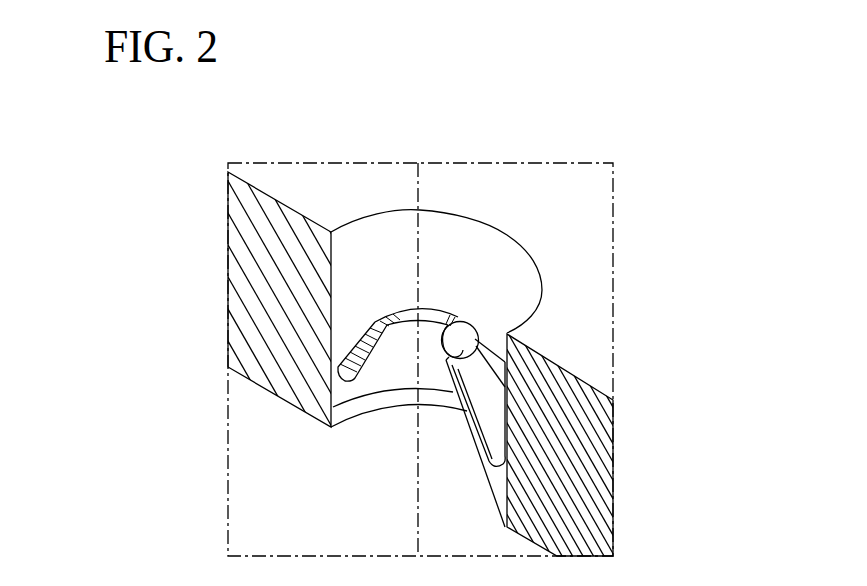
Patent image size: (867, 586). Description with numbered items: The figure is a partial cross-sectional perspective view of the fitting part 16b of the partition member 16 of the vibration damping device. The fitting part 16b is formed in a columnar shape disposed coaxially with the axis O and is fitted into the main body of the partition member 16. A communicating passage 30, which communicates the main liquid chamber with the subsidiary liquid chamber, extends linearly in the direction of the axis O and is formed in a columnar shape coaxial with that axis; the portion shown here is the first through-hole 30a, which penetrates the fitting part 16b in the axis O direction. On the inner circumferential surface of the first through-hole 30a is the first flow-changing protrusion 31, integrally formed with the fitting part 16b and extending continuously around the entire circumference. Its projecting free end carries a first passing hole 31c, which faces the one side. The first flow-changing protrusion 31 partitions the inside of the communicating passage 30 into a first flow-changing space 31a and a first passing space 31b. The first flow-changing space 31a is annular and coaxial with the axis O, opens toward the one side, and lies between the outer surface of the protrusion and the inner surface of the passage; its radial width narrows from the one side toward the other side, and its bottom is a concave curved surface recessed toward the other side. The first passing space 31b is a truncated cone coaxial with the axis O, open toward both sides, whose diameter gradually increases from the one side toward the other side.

The partition member 16 is at (616, 510).
The fitting part 16b is at (583, 437).
The communicating passage 30 is at (375, 248).
The first through-hole 30a is at (510, 283).
The first flow-changing protrusion 31 is at (352, 352).
The first flow-changing space 31a is at (349, 327).
The first passing space 31b is at (354, 392).
The first passing hole 31c is at (455, 320).
The axis O is at (420, 188).